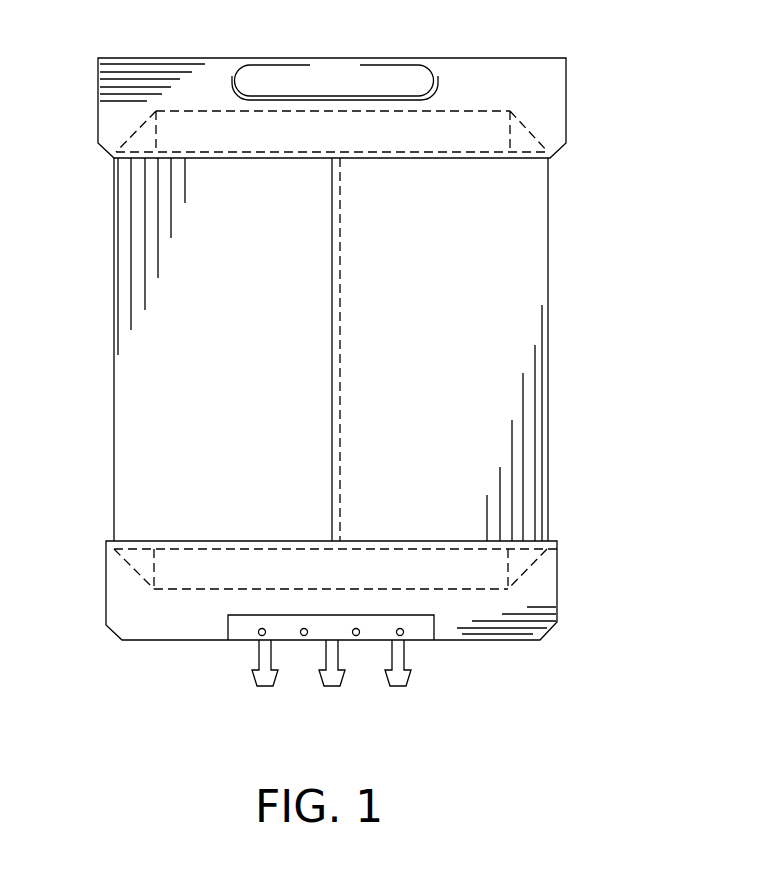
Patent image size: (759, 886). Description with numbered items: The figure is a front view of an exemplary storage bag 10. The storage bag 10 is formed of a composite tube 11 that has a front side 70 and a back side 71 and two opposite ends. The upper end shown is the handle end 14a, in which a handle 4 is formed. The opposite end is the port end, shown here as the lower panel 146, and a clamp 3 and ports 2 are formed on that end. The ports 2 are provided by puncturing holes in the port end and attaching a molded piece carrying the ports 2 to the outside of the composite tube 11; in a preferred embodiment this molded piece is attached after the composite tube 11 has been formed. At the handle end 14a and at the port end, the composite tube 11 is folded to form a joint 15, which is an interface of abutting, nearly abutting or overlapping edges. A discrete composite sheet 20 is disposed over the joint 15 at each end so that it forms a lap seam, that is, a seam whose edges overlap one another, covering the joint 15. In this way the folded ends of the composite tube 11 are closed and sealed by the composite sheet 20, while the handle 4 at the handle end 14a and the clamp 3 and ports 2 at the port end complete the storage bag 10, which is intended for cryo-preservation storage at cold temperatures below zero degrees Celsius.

The storage bag 10 is at (614, 176).
The handle end 14a is at (582, 108).
The discrete composite sheet 20 is at (135, 75).
The handle 4 is at (368, 80).
The joint 15 is at (137, 153).
The front side 70 is at (510, 277).
The back side 71 is at (166, 370).
The composite tube 11 is at (548, 455).
The bottom panel 146 is at (574, 579).
The clamp 3 is at (240, 628).
The ports 2 is at (266, 686).